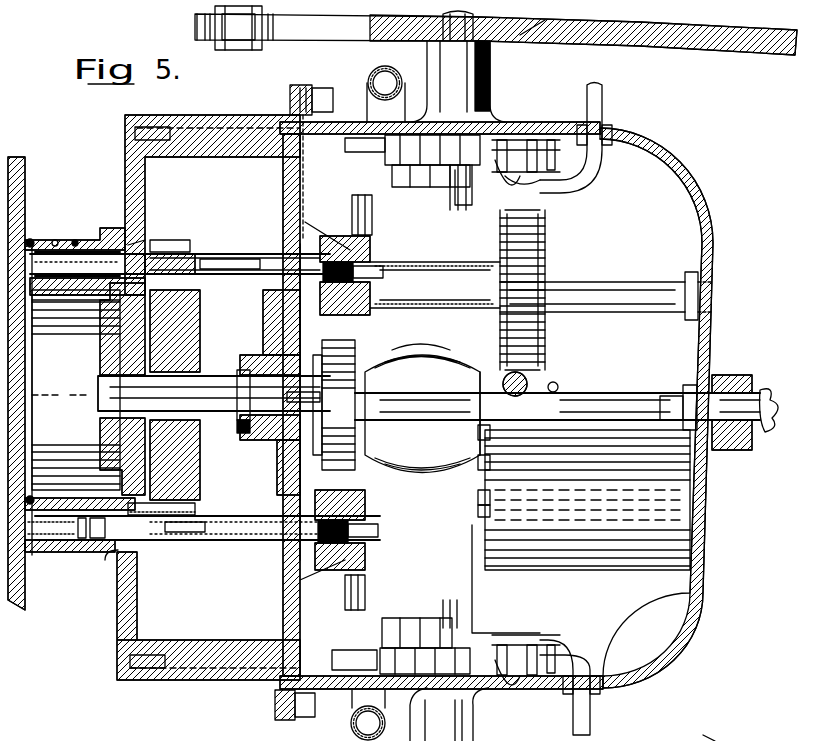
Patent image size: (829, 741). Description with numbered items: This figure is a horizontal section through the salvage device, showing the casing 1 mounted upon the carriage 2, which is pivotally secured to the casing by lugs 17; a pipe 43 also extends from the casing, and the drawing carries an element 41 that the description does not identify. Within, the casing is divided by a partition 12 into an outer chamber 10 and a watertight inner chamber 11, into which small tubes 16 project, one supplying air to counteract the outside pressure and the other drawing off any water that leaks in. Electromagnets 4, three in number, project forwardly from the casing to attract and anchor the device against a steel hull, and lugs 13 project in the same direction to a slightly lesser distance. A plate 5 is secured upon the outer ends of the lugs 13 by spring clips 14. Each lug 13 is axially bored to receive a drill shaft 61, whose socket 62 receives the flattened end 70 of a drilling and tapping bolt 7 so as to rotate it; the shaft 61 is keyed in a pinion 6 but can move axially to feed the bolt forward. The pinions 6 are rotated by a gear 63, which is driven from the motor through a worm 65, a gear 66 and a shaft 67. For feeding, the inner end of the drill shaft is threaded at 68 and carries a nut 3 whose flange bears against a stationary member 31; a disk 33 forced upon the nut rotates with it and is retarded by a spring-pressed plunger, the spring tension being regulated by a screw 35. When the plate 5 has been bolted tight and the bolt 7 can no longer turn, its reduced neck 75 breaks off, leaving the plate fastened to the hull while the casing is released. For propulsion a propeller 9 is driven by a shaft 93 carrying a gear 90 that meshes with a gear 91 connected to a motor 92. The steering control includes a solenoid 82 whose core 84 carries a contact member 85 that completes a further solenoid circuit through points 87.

The casing 1 is at (185, 655).
The carriage 2 is at (716, 40).
The nut 3 is at (372, 230).
The electromagnets 4 is at (76, 390).
The plate 5 is at (68, 352).
The pinion 6 is at (195, 248).
The drilling and tapping bolt 7 is at (68, 240).
The propeller 9 is at (765, 390).
The outer chamber 10 is at (214, 199).
The inner chamber 11 is at (576, 409).
The partition 12 is at (295, 472).
The lugs 13 is at (100, 242).
The spring clips 14 is at (32, 240).
The tubes 16 is at (557, 384).
The lugs 17 is at (470, 66).
The stationary member 31 is at (330, 245).
The disk 33 is at (360, 315).
The screw 35 is at (714, 727).
The end plate 41 is at (22, 207).
The pipe 43 is at (370, 66).
The drill shaft 61 is at (228, 256).
The socket 62 is at (158, 246).
The gear 63 is at (205, 335).
The worm 65 is at (486, 375).
The gear 66 is at (500, 238).
The shaft 67 is at (440, 322).
The threaded portion 68 is at (340, 312).
The flattened end 70 is at (140, 240).
The reduced neck 75 is at (80, 305).
The solenoid 82 is at (395, 170).
The core 84 is at (352, 152).
The contact member 85 is at (530, 645).
The points 87 is at (535, 178).
The gear 90 is at (355, 367).
The gear 91 is at (290, 352).
The motor 92 is at (440, 432).
The shaft 93 is at (655, 400).